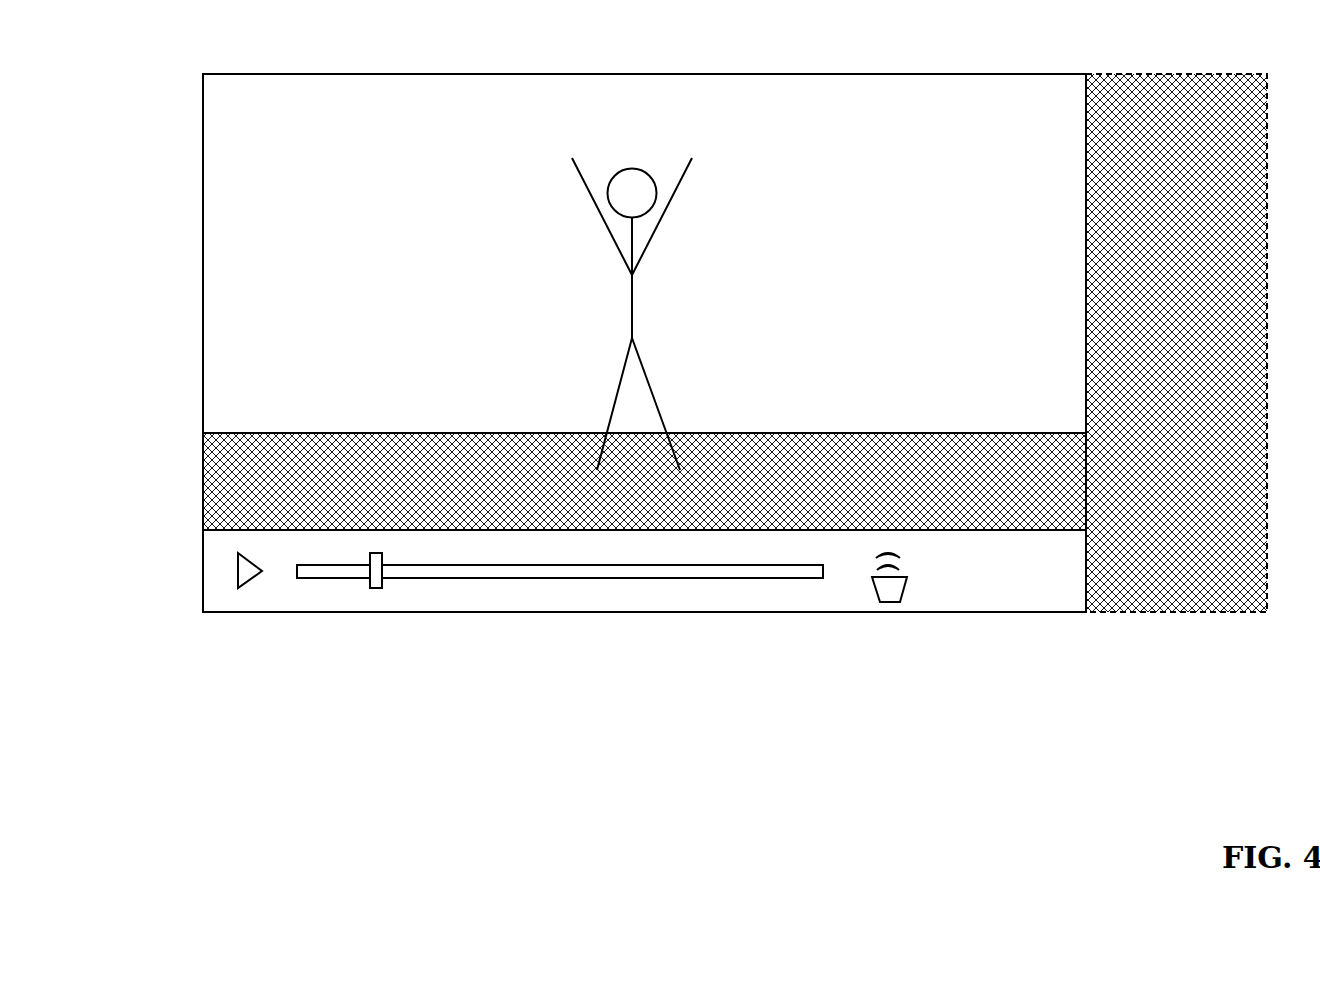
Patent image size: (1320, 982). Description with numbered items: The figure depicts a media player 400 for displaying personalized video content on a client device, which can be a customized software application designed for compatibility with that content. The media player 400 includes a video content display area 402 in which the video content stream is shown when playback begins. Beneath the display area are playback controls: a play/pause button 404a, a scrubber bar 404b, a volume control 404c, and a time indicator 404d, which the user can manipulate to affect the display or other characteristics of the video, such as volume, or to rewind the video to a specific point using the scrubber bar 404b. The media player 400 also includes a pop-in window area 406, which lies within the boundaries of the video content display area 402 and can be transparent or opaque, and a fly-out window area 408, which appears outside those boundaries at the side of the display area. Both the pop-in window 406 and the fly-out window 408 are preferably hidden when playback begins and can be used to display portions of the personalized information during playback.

The media player 400 is at (104, 853).
The video content display area 402 is at (295, 123).
The play/pause button 404a is at (257, 567).
The scrubber bar 404b is at (418, 577).
The volume control 404c is at (883, 590).
The time indicator 404d is at (1012, 585).
The pop-in window area 406 is at (293, 495).
The fly-out window area 408 is at (1167, 123).